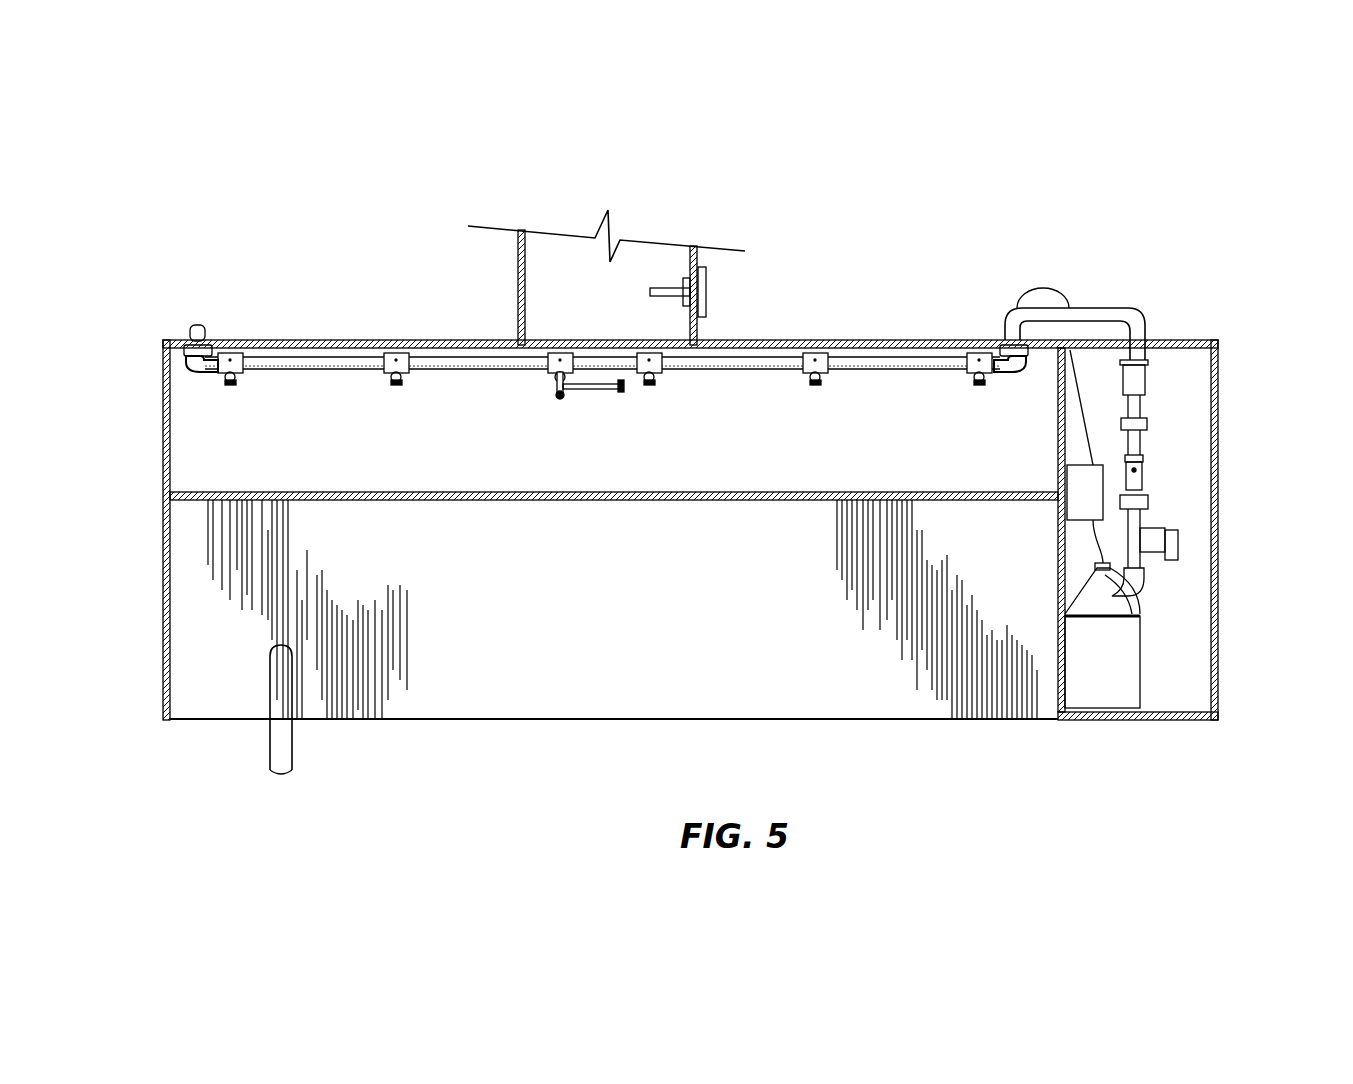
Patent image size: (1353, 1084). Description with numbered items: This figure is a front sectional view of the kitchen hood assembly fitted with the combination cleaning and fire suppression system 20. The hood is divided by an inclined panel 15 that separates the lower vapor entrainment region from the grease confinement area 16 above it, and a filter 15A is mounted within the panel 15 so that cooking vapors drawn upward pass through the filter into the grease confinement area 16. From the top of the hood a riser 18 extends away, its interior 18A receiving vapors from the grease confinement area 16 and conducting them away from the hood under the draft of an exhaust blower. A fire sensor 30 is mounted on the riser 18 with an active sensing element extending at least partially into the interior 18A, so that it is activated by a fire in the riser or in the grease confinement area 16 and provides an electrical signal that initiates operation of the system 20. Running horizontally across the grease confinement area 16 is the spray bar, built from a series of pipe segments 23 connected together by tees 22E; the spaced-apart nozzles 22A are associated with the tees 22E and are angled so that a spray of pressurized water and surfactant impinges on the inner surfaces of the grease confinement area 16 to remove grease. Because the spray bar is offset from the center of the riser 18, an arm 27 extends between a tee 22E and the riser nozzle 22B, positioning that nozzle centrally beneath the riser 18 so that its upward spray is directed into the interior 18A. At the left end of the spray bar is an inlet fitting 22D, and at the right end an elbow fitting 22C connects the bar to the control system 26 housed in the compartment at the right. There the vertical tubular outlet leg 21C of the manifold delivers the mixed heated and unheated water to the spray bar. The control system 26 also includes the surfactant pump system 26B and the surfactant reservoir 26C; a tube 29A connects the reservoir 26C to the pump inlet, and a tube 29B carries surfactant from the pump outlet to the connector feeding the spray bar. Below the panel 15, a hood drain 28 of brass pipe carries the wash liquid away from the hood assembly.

The inclined panel 15 is at (620, 668).
The filter 15A is at (455, 500).
The grease confinement area 16 is at (232, 458).
The riser 18 is at (512, 262).
The interior of riser 18A is at (635, 292).
The combination cleaning and fire suppression system 20 is at (762, 450).
The vertical tubular outlet leg 21C is at (1135, 407).
The nozzles 22A is at (230, 385).
The riser nozzle 22B is at (627, 384).
The elbow fitting 22C is at (1002, 340).
The inlet elbow fitting 22D is at (195, 340).
The tees 22E is at (230, 352).
The pipe segments 23 is at (500, 368).
The control system 26 is at (1245, 537).
The surfactant pump system 26B is at (1088, 488).
The surfactant reservoir 26C is at (1115, 655).
The arm 27 is at (590, 388).
The hood drain 28 is at (280, 750).
The tube 29A is at (1097, 548).
The tube 29B is at (1045, 290).
The fire sensor 30 is at (668, 292).